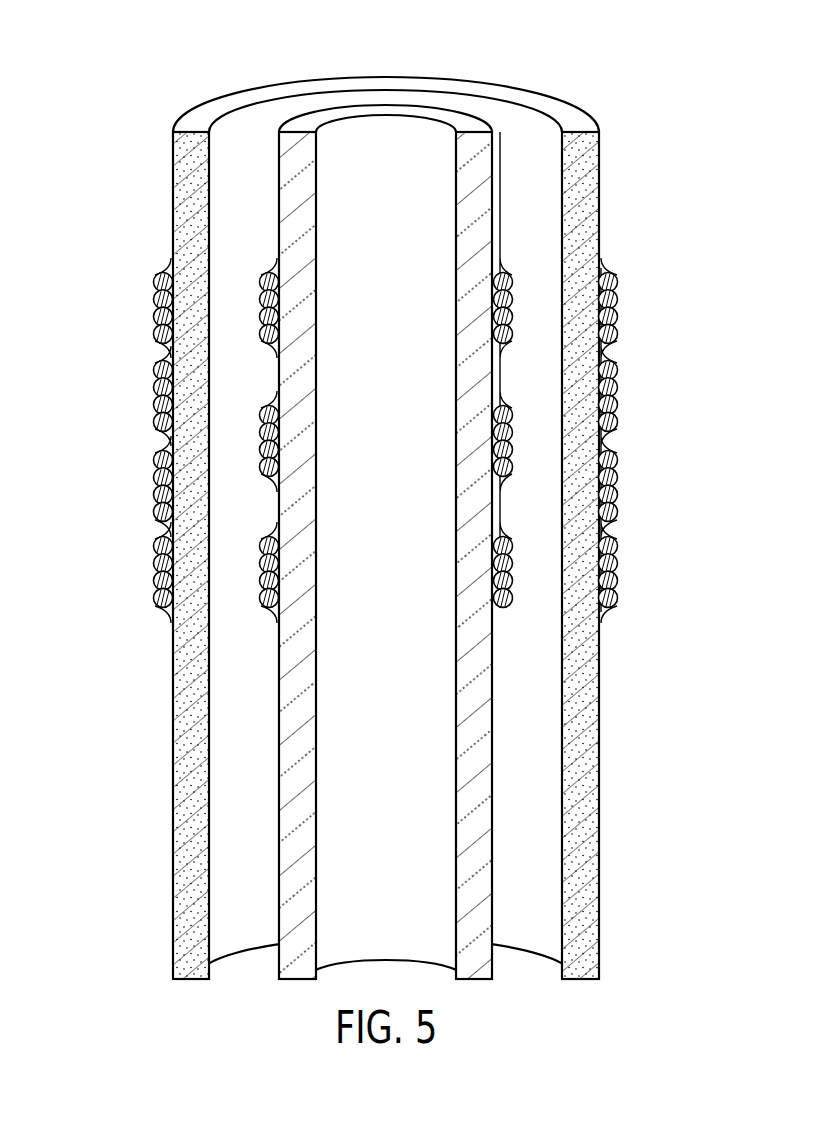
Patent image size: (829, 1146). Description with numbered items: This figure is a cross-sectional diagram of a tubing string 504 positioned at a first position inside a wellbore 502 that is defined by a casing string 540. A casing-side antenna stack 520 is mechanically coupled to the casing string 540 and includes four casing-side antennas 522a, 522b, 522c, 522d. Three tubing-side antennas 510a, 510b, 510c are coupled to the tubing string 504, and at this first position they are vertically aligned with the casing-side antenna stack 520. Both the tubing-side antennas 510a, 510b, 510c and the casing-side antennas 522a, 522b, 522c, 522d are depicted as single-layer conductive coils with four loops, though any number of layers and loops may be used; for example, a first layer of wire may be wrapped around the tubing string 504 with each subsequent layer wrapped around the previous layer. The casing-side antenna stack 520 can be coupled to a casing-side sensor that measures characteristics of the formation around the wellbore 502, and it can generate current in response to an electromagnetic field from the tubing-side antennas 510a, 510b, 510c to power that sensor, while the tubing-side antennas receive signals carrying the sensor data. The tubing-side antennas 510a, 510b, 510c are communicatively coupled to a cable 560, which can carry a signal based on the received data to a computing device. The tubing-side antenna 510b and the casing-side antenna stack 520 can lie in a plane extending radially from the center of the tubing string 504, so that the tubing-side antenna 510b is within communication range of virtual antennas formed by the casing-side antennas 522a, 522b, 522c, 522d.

The wellbore 502 is at (114, 138).
The tubing string 504 is at (294, 136).
The casing string 540 is at (188, 132).
The cable 560 is at (501, 160).
The casing-side antenna stack 520 is at (140, 272).
The tubing-side antenna 510a is at (526, 299).
The tubing-side antenna 510b is at (523, 435).
The tubing-side antenna 510c is at (523, 555).
The casing-side antenna 522a is at (624, 308).
The casing-side antenna 522b is at (624, 383).
The casing-side antenna 522c is at (624, 480).
The casing-side antenna 522d is at (624, 570).